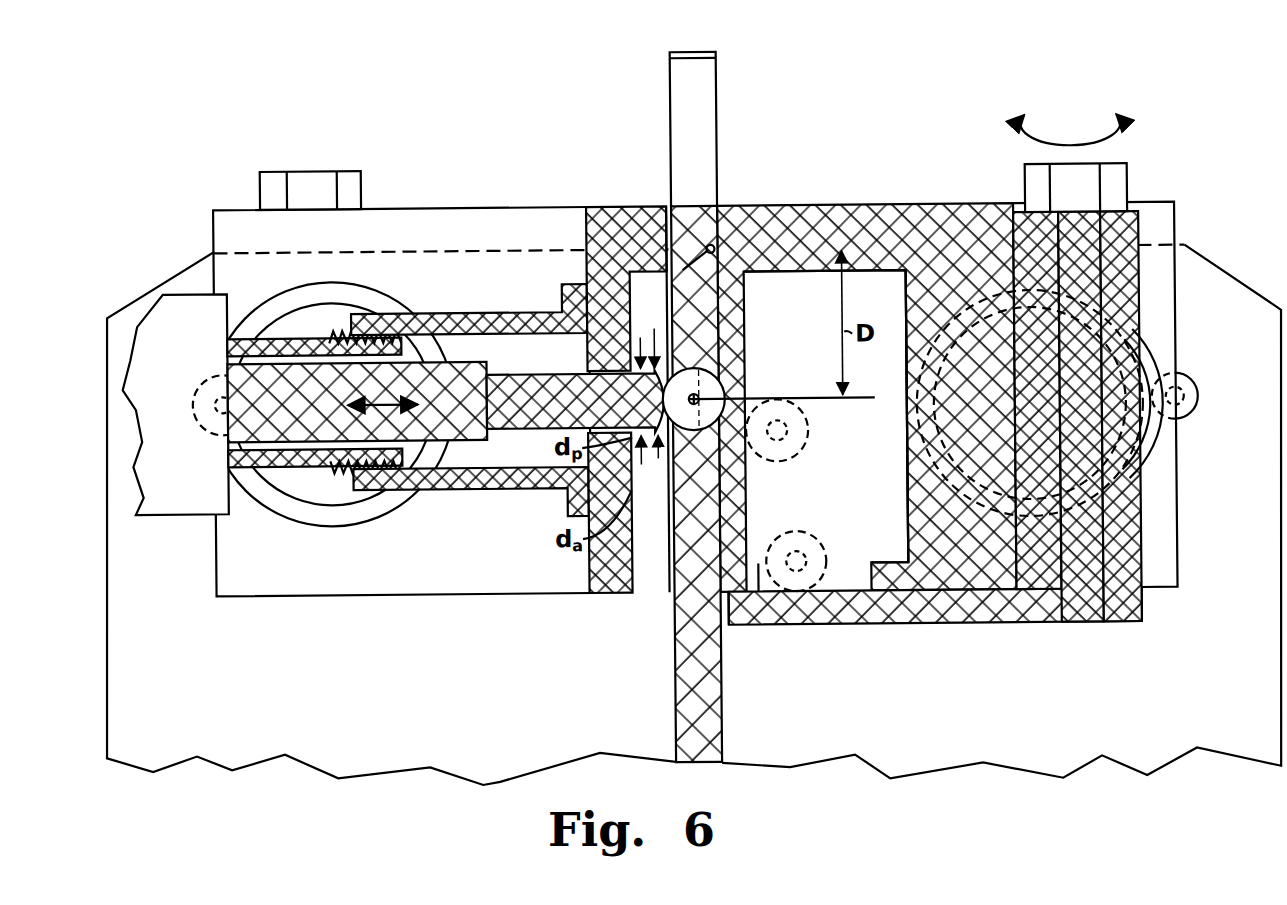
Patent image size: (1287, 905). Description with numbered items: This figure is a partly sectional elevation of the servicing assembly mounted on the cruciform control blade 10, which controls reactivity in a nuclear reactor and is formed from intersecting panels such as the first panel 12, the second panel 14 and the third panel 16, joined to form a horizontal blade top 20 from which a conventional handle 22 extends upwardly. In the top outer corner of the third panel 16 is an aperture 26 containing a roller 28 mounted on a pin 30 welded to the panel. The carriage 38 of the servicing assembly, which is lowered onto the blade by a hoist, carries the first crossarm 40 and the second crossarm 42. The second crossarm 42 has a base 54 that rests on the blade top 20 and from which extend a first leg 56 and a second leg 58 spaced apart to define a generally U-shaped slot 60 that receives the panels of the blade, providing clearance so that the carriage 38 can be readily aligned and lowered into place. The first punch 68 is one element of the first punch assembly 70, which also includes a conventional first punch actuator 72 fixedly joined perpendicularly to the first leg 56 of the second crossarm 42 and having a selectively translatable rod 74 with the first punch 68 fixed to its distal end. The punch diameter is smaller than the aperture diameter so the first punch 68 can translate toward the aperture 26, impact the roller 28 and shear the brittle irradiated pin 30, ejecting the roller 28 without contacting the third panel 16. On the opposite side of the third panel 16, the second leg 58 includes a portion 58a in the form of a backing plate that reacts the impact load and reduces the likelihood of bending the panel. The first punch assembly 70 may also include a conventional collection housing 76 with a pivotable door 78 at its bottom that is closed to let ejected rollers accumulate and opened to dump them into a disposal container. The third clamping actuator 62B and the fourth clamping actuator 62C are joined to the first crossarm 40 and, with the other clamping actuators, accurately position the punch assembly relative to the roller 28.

The control blade 10 is at (738, 165).
The first panel 12 is at (391, 770).
The second panel 14 is at (964, 769).
The third panel 16 is at (721, 700).
The blade top 20 is at (713, 248).
The handle 22 is at (673, 71).
The aperture 26 is at (745, 468).
The roller 28 is at (722, 392).
The pin 30 is at (725, 399).
The carriage 38 is at (1150, 202).
The first crossarm 40 is at (452, 205).
The second crossarm 42 is at (850, 204).
The base 54 is at (695, 247).
The first leg 56 is at (645, 592).
The second leg 58 is at (730, 625).
The backing plate 58a is at (745, 505).
The second U-shaped slot 60 is at (668, 592).
The third clamping actuator 62B is at (352, 522).
The fourth clamping actuator 62C is at (1176, 462).
The first punch 68 is at (523, 378).
The first punch assembly 70 is at (944, 155).
The first punch actuator 72 is at (177, 510).
The rod 74 is at (320, 465).
The collection housing 76 is at (907, 516).
The door 78 is at (928, 625).